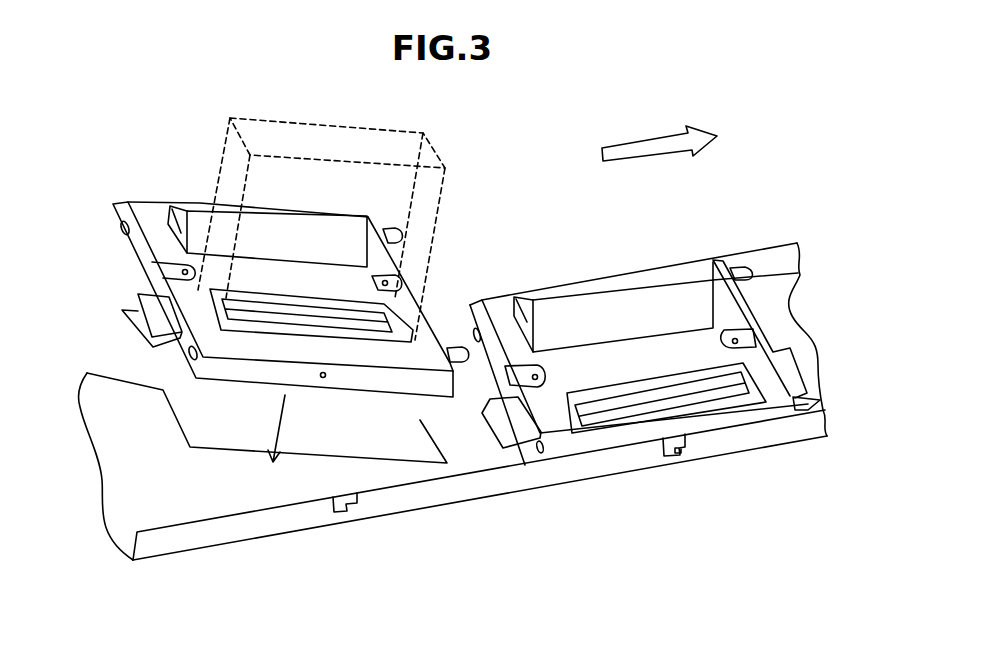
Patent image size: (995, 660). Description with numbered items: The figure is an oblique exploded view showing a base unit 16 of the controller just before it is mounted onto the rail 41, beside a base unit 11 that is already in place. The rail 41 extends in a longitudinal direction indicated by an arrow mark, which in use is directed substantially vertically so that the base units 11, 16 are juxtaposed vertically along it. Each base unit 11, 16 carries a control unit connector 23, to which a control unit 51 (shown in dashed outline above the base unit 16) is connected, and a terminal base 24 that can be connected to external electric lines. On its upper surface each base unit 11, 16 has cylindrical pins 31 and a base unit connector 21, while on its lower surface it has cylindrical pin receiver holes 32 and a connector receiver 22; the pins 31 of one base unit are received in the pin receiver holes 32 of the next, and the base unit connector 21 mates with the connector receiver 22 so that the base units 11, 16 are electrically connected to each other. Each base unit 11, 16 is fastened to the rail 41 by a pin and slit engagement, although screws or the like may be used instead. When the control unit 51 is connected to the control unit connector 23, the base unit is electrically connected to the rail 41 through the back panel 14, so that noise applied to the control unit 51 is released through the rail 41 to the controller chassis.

The base unit 11 is at (790, 298).
The back panel 14 is at (298, 430).
The base unit 16 is at (122, 255).
The base unit connector 21 is at (425, 300).
The connector receiver 22 is at (137, 318).
The control unit connector 23 is at (348, 323).
The terminal base 24 is at (200, 205).
The cylindrical pin 31 is at (388, 232).
The pin receiver hole 32 is at (121, 222).
The rail 41 is at (178, 545).
The control unit 51 is at (425, 152).